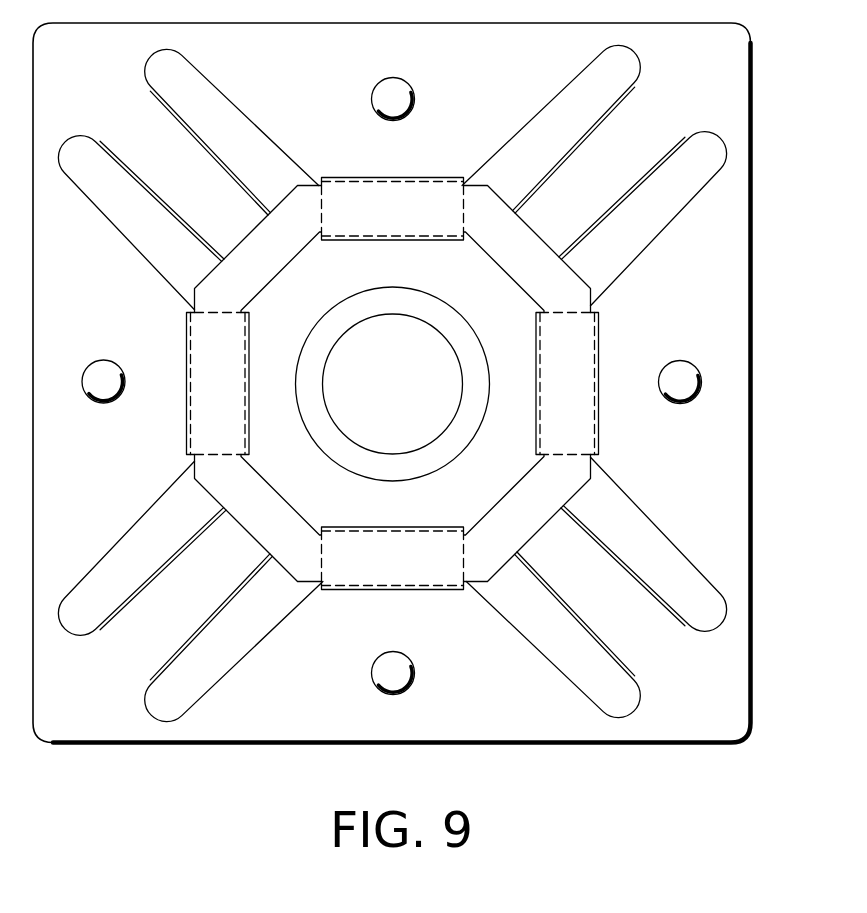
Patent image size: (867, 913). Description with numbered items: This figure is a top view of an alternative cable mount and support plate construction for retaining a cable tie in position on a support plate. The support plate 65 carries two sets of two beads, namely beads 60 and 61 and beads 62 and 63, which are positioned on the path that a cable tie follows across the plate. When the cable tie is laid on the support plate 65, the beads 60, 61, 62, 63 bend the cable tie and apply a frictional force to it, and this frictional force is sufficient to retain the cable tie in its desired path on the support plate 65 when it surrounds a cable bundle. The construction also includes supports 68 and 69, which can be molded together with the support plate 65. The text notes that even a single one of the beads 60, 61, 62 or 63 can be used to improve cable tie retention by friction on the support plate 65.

The bead 60 is at (396, 101).
The bead 61 is at (397, 675).
The bead 62 is at (673, 385).
The bead 63 is at (102, 388).
The support plate 65 is at (733, 353).
The support 68 is at (568, 347).
The support 69 is at (223, 427).